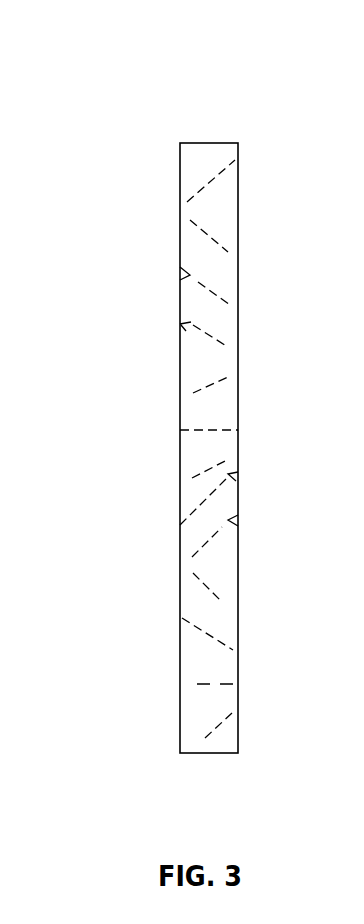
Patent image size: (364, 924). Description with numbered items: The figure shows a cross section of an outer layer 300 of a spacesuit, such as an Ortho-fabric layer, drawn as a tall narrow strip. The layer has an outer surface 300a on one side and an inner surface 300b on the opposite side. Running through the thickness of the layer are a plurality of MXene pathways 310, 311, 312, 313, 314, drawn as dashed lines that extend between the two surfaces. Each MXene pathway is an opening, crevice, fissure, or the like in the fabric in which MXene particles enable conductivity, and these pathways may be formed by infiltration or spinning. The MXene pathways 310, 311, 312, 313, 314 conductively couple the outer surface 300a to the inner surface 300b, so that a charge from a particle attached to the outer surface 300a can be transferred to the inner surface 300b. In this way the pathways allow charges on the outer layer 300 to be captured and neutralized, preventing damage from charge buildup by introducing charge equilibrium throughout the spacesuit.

The outer layer 300 is at (116, 64).
The outer surface 300a is at (238, 712).
The inner surface 300b is at (180, 660).
The MXene pathway 310 is at (184, 205).
The MXene pathway 311 is at (180, 279).
The MXene pathway 312 is at (180, 325).
The MXene pathway 313 is at (238, 476).
The MXene pathway 314 is at (238, 522).